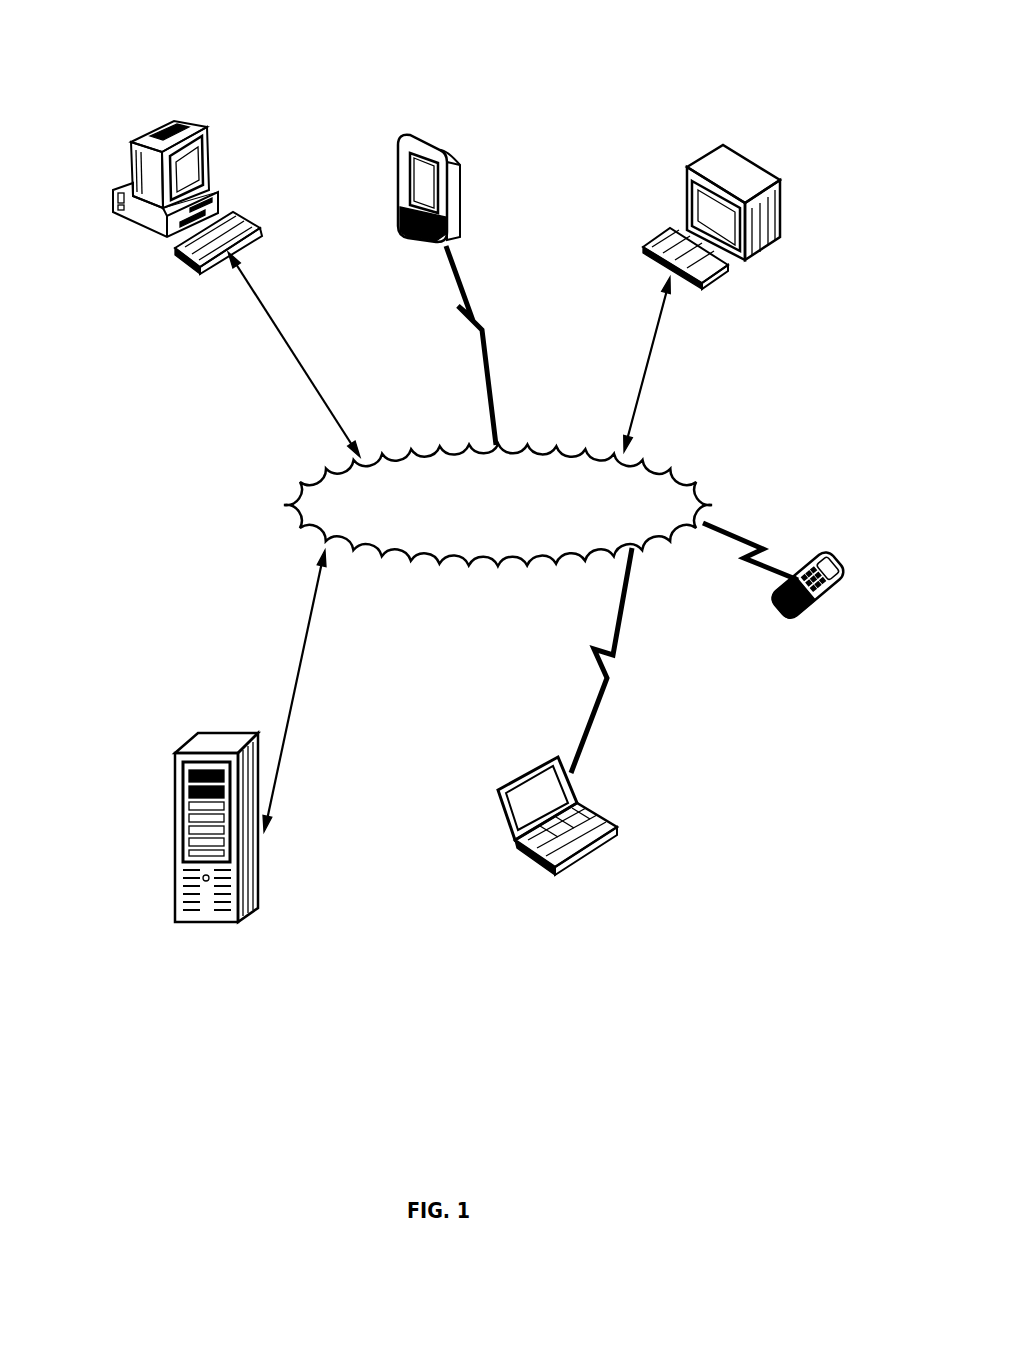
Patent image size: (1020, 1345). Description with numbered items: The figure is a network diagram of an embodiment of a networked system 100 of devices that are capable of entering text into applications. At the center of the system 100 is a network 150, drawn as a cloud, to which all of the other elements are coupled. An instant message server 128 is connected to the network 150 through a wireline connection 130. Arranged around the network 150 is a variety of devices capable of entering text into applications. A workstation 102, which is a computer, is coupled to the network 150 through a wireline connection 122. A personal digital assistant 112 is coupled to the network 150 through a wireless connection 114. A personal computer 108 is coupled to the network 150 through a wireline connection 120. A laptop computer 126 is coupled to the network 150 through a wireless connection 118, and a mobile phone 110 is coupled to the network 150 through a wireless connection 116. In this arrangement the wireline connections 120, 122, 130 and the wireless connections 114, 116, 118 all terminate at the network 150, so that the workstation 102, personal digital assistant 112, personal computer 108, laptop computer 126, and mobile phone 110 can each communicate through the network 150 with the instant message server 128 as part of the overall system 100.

The networked system 100 is at (758, 68).
The workstation 102 is at (748, 163).
The personal computer 108 is at (205, 125).
The mobile phone 110 is at (826, 548).
The personal digital assistant 112 is at (447, 149).
The wireless connection 114 is at (483, 388).
The wireless connection 116 is at (738, 543).
The wireless connection 118 is at (613, 630).
The wireline connection 120 is at (297, 357).
The wireline connection 122 is at (645, 377).
The laptop computer 126 is at (598, 812).
The instant message server 128 is at (260, 860).
The wireline connection 130 is at (298, 653).
The network 150 is at (703, 482).